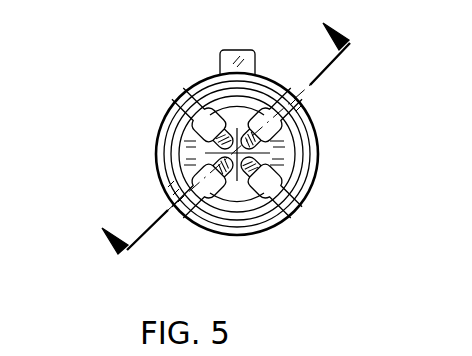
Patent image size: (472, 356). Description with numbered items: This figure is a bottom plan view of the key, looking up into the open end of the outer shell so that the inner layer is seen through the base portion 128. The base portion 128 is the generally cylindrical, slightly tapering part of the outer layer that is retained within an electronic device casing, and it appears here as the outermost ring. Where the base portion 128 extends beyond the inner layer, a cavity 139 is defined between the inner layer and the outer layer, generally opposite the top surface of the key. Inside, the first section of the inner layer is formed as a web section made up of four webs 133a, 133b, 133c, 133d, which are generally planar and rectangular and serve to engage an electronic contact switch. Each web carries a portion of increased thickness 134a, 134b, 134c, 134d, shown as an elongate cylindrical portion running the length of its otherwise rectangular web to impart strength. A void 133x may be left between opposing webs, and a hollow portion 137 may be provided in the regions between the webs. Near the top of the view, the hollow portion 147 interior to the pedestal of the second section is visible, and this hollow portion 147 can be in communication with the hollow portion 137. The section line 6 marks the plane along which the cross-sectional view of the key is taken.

The section line 6- 6 is at (231, 148).
The base portion 128 is at (158, 187).
The web 133a is at (190, 216).
The web 133b is at (297, 205).
The web 133c is at (300, 102).
The web 133d is at (190, 95).
The void 133x is at (166, 137).
The increased thickness portion 134a is at (218, 223).
The increased thickness portion 134b is at (292, 177).
The increased thickness portion 134c is at (297, 133).
The increased thickness portion 134d is at (196, 120).
The hollow portion 137 is at (263, 104).
The cavity 139 is at (160, 154).
The hollow portion 147 is at (224, 50).